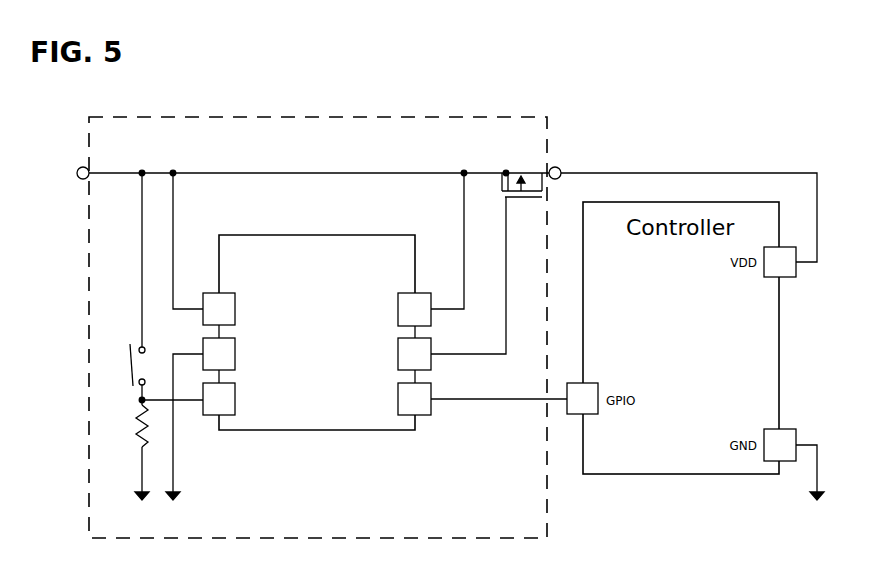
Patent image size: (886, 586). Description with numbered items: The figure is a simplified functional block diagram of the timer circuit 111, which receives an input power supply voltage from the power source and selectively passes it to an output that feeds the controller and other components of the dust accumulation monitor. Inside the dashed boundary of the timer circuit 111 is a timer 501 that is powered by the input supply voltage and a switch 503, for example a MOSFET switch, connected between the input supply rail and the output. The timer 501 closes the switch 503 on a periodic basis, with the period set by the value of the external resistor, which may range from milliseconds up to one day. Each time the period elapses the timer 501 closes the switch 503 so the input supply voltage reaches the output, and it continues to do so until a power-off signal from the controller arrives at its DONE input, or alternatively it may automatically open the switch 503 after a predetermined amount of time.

The timer circuit 111 is at (548, 117).
The timer 501 is at (397, 430).
The switch 503 is at (512, 172).